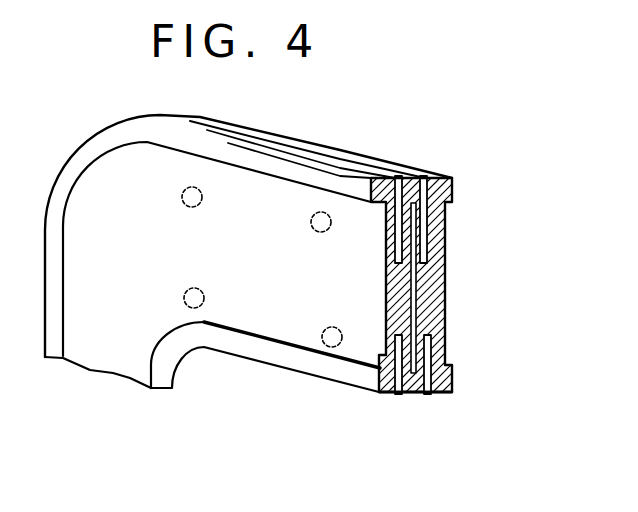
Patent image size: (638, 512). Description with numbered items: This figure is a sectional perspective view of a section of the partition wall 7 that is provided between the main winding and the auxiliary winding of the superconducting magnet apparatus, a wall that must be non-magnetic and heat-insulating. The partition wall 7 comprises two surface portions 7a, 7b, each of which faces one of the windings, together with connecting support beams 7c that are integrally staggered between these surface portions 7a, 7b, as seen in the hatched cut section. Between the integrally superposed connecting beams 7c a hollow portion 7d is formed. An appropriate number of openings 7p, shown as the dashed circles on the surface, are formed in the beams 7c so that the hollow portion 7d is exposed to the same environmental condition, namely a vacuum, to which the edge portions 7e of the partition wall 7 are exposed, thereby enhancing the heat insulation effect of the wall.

The partition wall 7 is at (398, 105).
The surface portion 7a is at (262, 269).
The surface portion 7b is at (443, 277).
The connecting support beams 7c is at (413, 393).
The hollow portion 7d is at (432, 355).
The edge portions 7e is at (405, 171).
The openings 7p is at (195, 308).